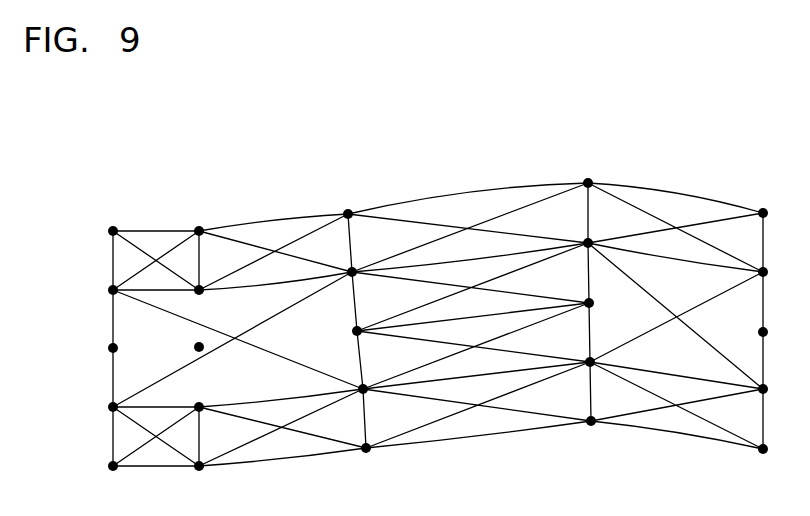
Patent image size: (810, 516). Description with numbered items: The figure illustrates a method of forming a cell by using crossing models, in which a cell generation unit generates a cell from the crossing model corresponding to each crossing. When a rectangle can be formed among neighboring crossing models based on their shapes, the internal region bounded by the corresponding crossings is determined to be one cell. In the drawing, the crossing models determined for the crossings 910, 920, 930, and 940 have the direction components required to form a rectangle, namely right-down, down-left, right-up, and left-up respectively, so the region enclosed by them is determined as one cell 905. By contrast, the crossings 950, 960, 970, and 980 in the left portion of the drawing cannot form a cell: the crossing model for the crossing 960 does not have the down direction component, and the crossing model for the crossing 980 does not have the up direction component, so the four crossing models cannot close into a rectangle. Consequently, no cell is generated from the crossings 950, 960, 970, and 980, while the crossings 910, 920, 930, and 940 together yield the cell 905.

The cell 905 is at (474, 204).
The crossing 910 is at (351, 212).
The crossing 920 is at (591, 181).
The crossing 930 is at (355, 270).
The crossing 940 is at (598, 235).
The crossing 950 is at (110, 290).
The crossing 960 is at (203, 287).
The crossing 970 is at (110, 407).
The crossing 980 is at (202, 405).